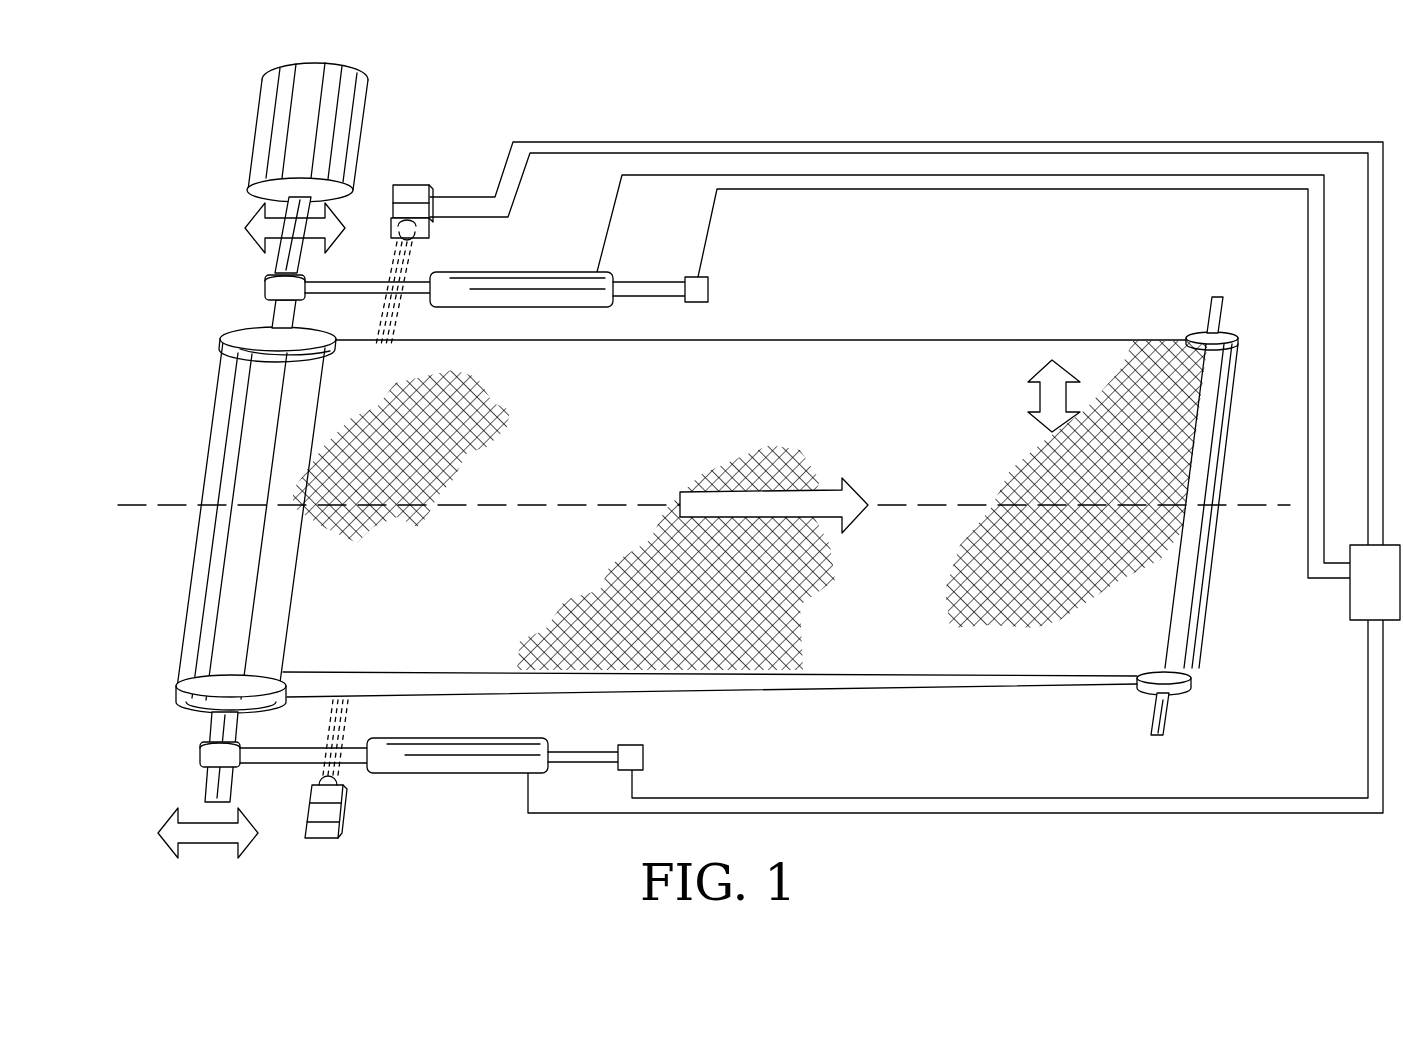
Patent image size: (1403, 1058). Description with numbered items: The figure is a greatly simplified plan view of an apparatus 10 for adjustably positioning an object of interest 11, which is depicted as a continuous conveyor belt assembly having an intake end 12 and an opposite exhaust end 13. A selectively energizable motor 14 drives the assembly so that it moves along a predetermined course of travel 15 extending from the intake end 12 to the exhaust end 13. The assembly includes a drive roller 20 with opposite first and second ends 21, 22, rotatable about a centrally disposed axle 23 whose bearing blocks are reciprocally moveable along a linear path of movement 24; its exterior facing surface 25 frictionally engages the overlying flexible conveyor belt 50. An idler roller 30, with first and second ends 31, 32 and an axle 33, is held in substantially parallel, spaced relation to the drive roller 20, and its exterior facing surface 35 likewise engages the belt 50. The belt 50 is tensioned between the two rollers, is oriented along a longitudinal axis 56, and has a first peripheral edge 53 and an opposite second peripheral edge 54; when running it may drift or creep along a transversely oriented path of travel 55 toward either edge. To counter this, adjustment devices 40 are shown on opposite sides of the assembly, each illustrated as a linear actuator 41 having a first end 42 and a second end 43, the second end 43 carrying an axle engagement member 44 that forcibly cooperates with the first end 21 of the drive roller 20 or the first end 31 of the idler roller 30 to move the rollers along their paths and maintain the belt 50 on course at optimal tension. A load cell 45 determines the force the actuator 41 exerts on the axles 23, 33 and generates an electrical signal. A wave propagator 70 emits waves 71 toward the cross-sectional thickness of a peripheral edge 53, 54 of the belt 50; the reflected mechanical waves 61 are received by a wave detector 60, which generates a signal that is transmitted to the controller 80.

The apparatus for adjustably positioning an object of interest 10 is at (944, 131).
The object of interest 11 is at (734, 506).
The intake end 12 is at (224, 500).
The exhaust end 13 is at (1220, 526).
The motor 14 is at (346, 120).
The predetermined course of travel 15 is at (818, 495).
The drive roller 20 is at (205, 680).
The first end of drive roller 21 is at (247, 334).
The second end of drive roller 22 is at (195, 700).
The axle 23 is at (285, 260).
The linear path of movement 24 is at (272, 224).
The exterior facing surface of drive roller 25 is at (296, 345).
The idler roller 30 is at (1192, 686).
The first end of idler roller 31 is at (1235, 337).
The second end of idler roller 32 is at (1178, 698).
The axle of idler roller 33 is at (1165, 715).
The exterior facing surface of idler roller 35 is at (1175, 672).
The adjustment device 40 is at (437, 497).
The linear actuator 41 is at (538, 278).
The first end of linear actuator 42 is at (605, 282).
The second end of linear actuator 43 is at (318, 287).
The axle engagement member 44 is at (268, 287).
The load cell 45 is at (700, 290).
The conveyor belt 50 is at (1050, 622).
The first peripheral edge 53 is at (780, 338).
The second peripheral edge 54 is at (900, 673).
The transversely oriented path of travel 55 is at (1082, 375).
The longitudinal axis 56 is at (170, 505).
The wave detector 60 is at (380, 508).
The reflected mechanical waves 61 is at (390, 340).
The wave propagator 70 is at (411, 186).
The emitted waves 71 is at (378, 345).
The controller 80 is at (1362, 597).